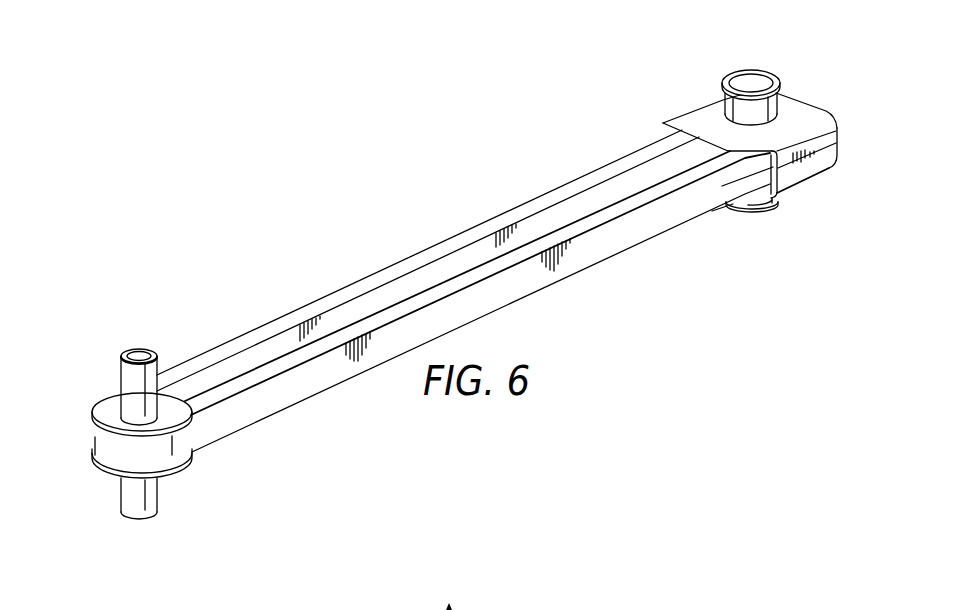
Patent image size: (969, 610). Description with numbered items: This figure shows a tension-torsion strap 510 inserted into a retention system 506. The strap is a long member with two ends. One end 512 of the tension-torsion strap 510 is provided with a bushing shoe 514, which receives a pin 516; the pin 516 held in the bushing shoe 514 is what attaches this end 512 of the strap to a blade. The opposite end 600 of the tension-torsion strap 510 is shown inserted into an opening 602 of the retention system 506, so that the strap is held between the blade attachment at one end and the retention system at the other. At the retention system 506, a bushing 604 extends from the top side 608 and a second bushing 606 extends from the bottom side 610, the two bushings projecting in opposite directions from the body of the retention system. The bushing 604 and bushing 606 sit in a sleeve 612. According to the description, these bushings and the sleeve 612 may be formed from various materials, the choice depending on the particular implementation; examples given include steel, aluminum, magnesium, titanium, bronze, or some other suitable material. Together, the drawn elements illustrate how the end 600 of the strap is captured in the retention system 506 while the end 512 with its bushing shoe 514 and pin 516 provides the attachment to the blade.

The retention system 506 is at (690, 104).
The tension-torsion strap 510 is at (416, 256).
The end 512 is at (94, 456).
The bushing shoe 514 is at (94, 407).
The pin 516 is at (137, 349).
The end 600 is at (762, 149).
The opening 602 is at (717, 218).
The bushing 604 is at (750, 68).
The bushing 606 is at (770, 214).
The top side 608 is at (795, 107).
The bottom side 610 is at (807, 185).
The sleeve 612 is at (838, 141).